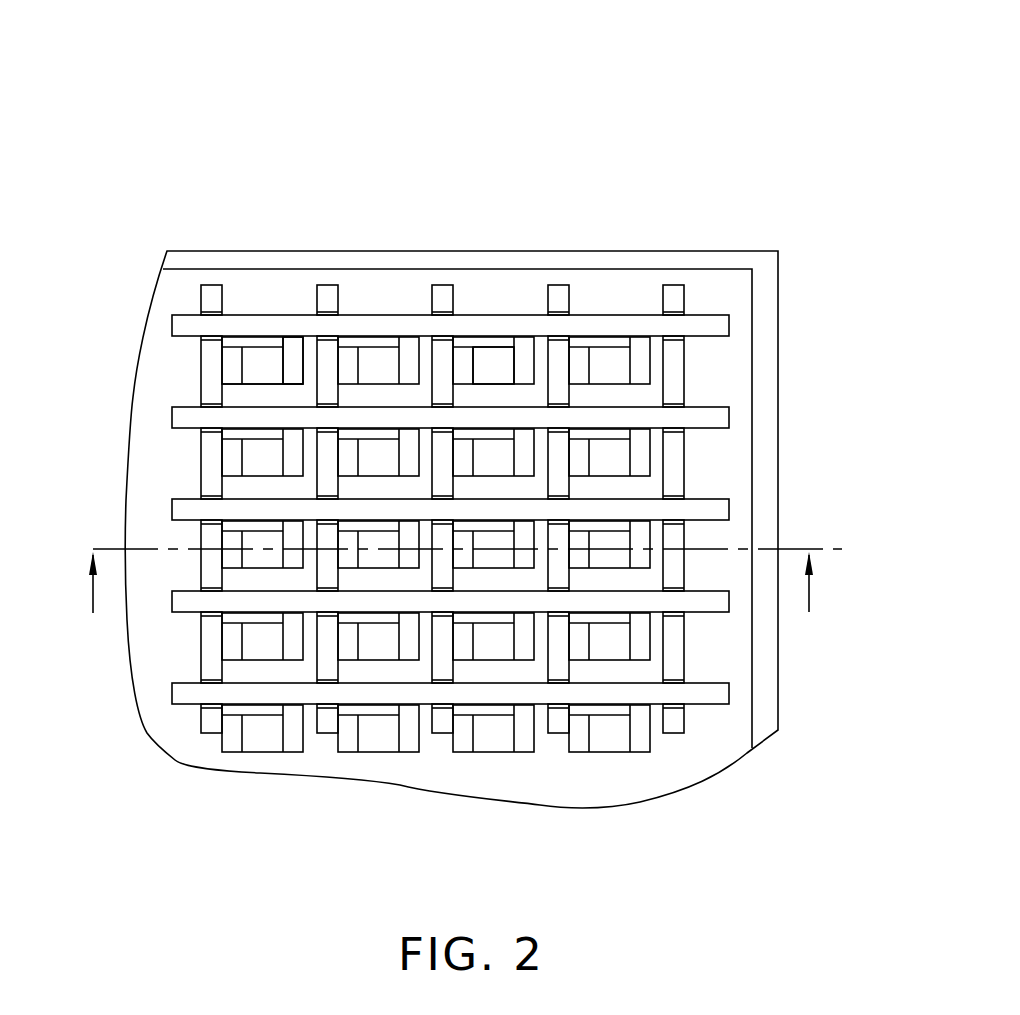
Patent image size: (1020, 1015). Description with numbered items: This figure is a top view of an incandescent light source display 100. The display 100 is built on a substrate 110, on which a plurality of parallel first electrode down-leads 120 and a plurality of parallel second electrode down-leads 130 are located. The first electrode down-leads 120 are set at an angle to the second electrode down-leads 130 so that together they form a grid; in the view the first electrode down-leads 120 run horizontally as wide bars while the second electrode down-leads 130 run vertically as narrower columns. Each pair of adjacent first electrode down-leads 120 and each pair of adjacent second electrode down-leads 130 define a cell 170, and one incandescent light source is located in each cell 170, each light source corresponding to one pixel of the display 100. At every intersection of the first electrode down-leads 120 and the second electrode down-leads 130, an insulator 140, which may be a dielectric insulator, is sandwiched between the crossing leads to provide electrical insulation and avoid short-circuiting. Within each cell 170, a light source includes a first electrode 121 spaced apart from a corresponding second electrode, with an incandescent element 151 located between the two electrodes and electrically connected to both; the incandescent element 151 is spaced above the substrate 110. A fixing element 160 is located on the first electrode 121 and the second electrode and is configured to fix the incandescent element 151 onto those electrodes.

The incandescent light source display 100 is at (464, 68).
The substrate 110 is at (728, 285).
The first electrode down-leads 120 is at (253, 327).
The first electrode 121 is at (298, 340).
The second electrode down-leads 130 is at (212, 292).
The insulators 140 is at (563, 310).
The incandescent element 151 is at (495, 362).
The fixing element 160 is at (297, 367).
The cells 170 is at (243, 400).